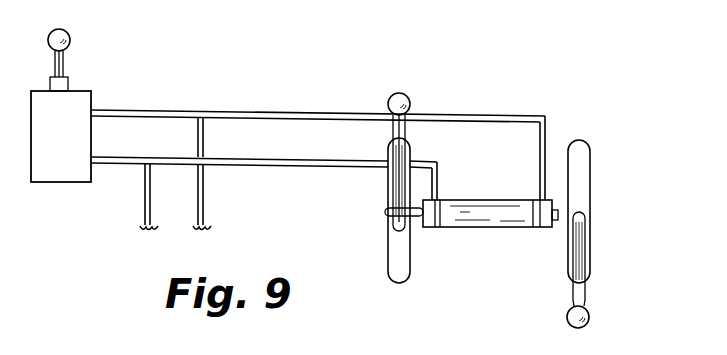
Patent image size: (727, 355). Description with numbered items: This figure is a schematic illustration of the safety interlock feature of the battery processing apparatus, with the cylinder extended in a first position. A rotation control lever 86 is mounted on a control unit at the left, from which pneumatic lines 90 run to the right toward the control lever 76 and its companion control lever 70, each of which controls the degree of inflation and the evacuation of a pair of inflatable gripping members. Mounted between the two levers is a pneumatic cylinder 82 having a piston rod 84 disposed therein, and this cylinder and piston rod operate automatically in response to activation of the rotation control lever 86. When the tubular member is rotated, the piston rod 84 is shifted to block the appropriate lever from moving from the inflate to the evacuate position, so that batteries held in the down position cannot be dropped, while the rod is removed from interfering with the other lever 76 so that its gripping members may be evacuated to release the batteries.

The control lever 70 is at (590, 320).
The control lever 76 is at (410, 97).
The pneumatic cylinder 82 is at (495, 215).
The piston rod 84 is at (413, 218).
The rotation control lever 86 is at (66, 33).
The pneumatic lines 90 is at (288, 111).